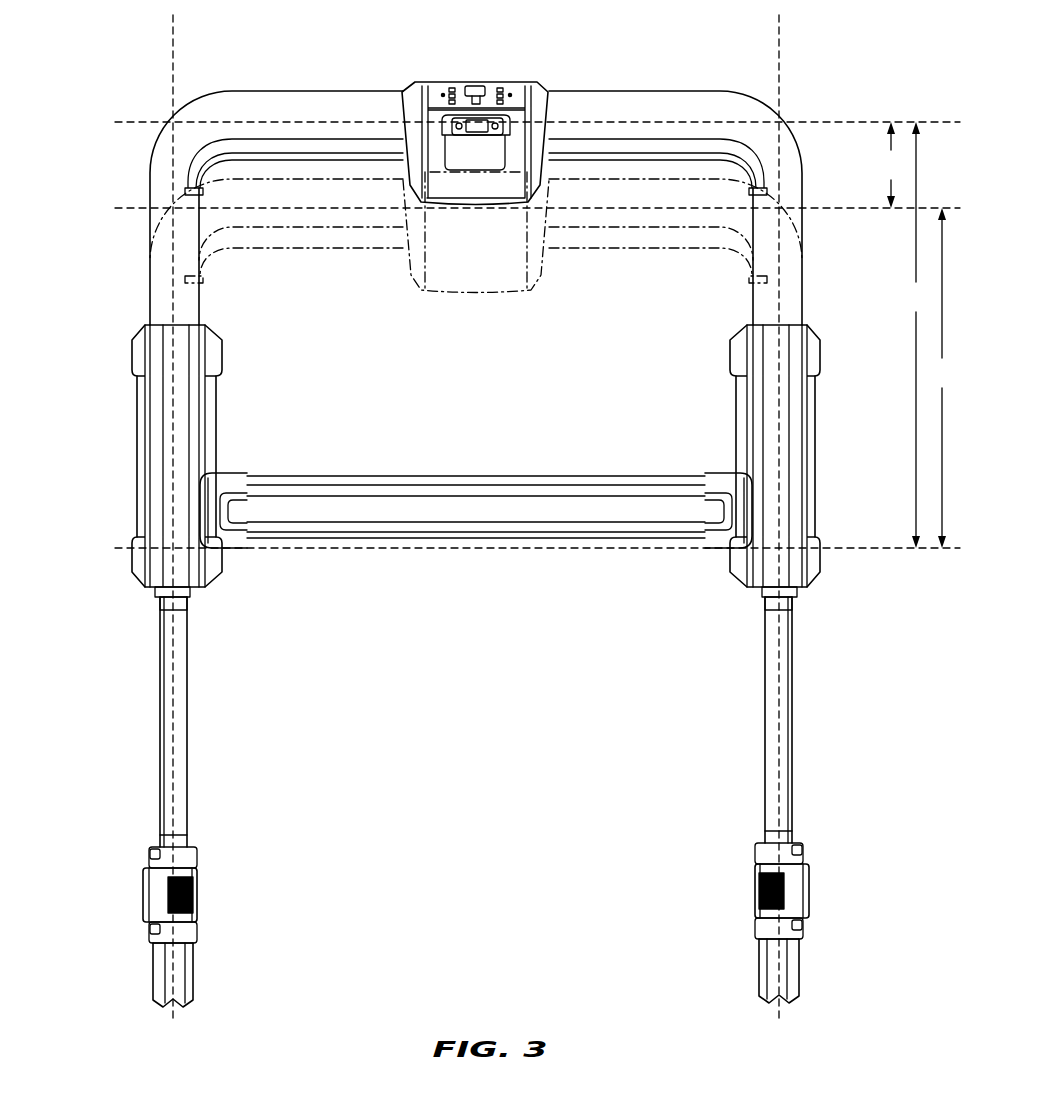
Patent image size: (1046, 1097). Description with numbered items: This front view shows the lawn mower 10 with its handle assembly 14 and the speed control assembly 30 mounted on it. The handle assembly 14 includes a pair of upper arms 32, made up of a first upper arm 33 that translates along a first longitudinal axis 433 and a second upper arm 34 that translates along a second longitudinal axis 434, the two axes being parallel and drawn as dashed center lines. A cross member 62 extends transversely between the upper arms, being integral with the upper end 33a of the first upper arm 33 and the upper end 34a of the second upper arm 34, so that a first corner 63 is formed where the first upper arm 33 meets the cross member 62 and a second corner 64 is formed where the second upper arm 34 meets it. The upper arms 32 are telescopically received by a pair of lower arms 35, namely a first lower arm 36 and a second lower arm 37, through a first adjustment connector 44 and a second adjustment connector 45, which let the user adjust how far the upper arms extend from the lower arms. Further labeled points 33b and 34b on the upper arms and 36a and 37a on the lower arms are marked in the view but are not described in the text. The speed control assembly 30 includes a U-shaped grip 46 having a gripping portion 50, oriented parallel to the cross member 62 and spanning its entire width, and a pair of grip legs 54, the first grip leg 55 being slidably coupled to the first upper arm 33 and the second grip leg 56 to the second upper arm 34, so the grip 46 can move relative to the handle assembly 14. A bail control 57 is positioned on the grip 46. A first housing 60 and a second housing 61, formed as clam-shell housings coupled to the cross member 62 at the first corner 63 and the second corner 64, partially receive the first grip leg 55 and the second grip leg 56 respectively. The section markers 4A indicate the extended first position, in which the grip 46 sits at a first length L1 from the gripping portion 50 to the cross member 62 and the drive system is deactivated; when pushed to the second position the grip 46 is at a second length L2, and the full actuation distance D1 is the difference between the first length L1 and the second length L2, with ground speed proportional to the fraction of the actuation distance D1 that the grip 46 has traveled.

The lawn mower 10 is at (832, 58).
The handle assembly 14 is at (76, 700).
The speed control assembly 30 is at (487, 60).
The pair of upper arms 32 is at (187, 777).
The first upper arm 33 is at (183, 737).
The upper end of first upper arm 33a is at (162, 600).
The first leg lower end 33b is at (163, 843).
The second upper arm 34 is at (767, 732).
The upper end of second upper arm 34a is at (793, 598).
The second leg lower end 34b is at (785, 837).
The pair of lower arms 35 is at (197, 980).
The first lower arm 36 is at (158, 988).
The first lower leg upper end 36a is at (178, 953).
The second lower arm 37 is at (790, 978).
The second lower leg upper end 37a is at (770, 942).
The first adjustment connector 44 is at (195, 895).
The second adjustment connector 45 is at (755, 885).
The U-shaped grip 46 is at (591, 108).
The gripping portion 50 is at (336, 107).
The pair of grip legs 54 is at (424, 238).
The first grip leg 55 is at (165, 280).
The second grip leg 56 is at (750, 297).
The bail control 57 is at (310, 157).
The first housing 60 is at (152, 402).
The second housing 61 is at (753, 407).
The cross member 62 is at (425, 488).
The first corner 63 is at (240, 573).
The second corner 64 is at (712, 573).
The first longitudinal axis 433 is at (177, 48).
The second longitudinal axis 434 is at (774, 51).
The section line 4A is at (162, 85).
The full actuation distance D1 is at (537, 165).
The first length L1 is at (537, 335).
The second length L2 is at (942, 378).